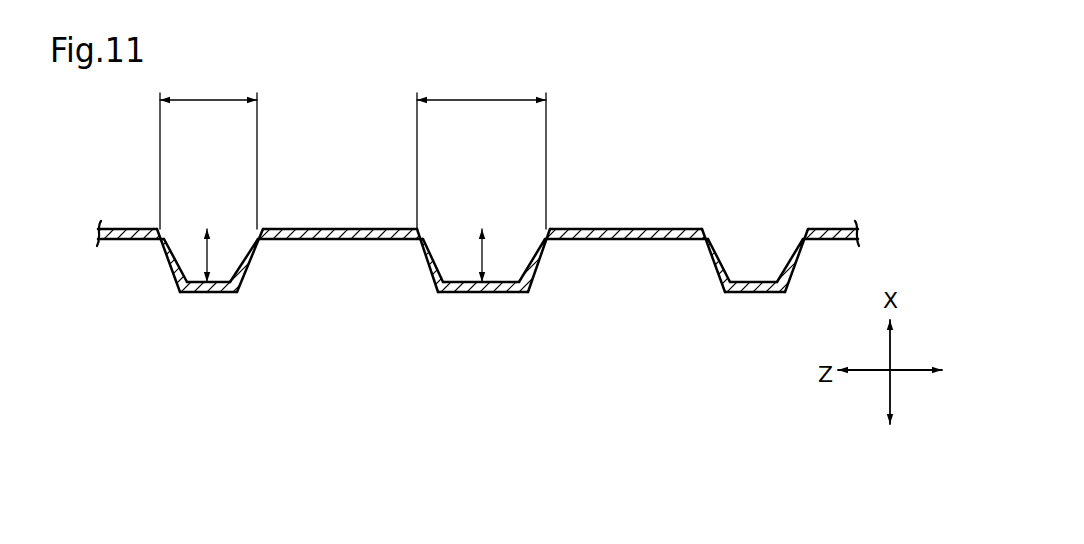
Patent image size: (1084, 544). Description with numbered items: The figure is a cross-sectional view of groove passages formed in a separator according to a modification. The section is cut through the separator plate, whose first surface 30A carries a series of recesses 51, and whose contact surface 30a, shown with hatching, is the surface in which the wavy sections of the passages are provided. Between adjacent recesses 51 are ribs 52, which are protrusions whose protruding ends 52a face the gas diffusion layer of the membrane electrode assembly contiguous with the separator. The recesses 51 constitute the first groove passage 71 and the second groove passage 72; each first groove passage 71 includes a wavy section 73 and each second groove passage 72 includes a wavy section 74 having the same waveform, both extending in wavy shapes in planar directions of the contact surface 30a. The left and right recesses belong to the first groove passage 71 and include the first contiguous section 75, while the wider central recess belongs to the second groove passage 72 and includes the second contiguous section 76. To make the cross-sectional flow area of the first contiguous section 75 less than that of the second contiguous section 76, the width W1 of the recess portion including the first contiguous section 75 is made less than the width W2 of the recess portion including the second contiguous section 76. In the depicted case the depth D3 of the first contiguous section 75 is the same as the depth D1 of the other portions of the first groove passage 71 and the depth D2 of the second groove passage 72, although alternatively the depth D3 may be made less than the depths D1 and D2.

The contact surface 30a is at (485, 239).
The first surface 30A is at (485, 239).
The flat top surface 52a is at (478, 203).
The rib 52 is at (317, 229).
The wavy section 73 is at (486, 211).
The first groove passage 71 is at (243, 255).
The wavy section 74 is at (483, 211).
The second groove passage 72 is at (532, 253).
The recess 51 is at (499, 310).
The first contiguous section 75 is at (224, 283).
The second contiguous section 76 is at (503, 283).
The width of recess portion including first contiguous section W1 is at (211, 100).
The width of recess portion including second contiguous section W2 is at (483, 100).
The depth of other portions of first groove passage D1 is at (207, 253).
The depth of second groove passage D2 is at (480, 254).
The depth of first contiguous section D3 is at (151, 287).